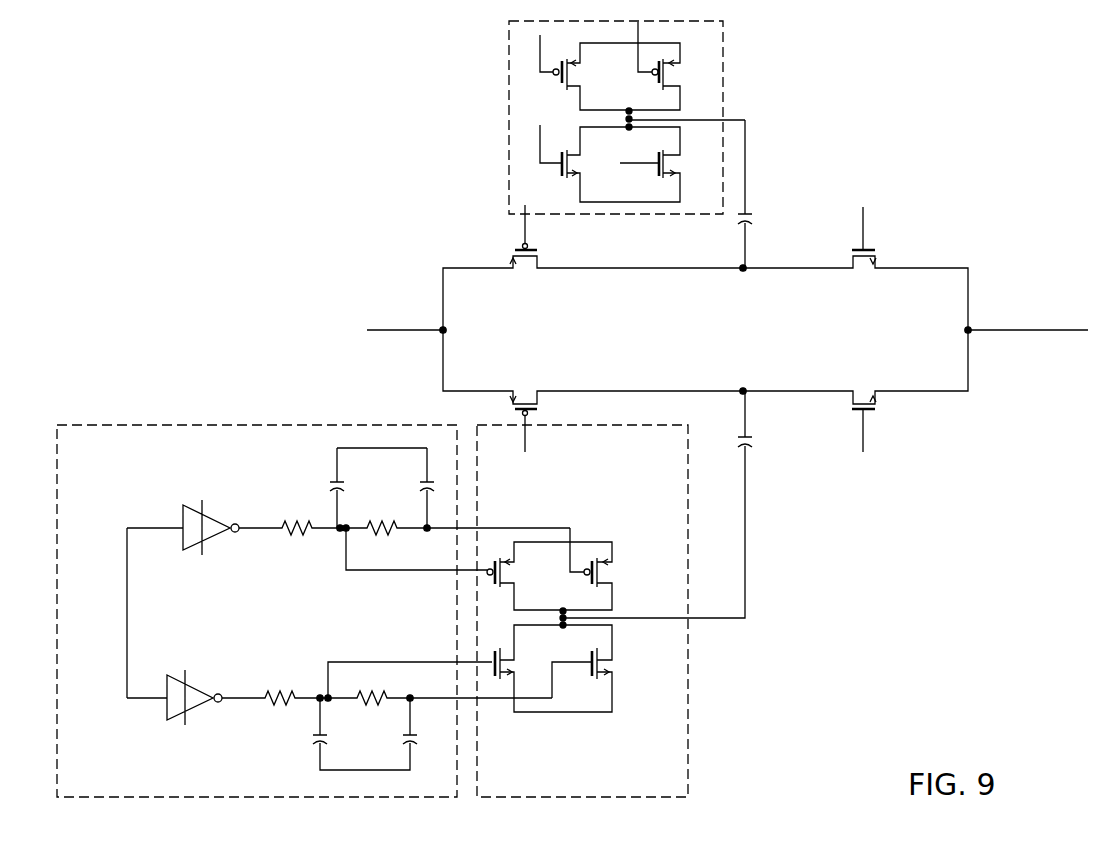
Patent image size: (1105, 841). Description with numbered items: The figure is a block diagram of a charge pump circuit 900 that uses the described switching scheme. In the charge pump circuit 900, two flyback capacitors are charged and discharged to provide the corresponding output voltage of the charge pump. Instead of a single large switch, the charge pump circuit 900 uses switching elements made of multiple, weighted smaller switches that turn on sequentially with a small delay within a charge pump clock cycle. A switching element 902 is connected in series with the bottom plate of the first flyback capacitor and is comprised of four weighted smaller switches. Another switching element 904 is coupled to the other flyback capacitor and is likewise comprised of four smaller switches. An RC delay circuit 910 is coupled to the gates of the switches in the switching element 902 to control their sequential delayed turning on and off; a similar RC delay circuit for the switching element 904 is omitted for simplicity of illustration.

The charge pump circuit 900 is at (1003, 97).
The switching element 902 is at (688, 690).
The switching element 904 is at (508, 40).
The RC delay circuit 910 is at (170, 425).